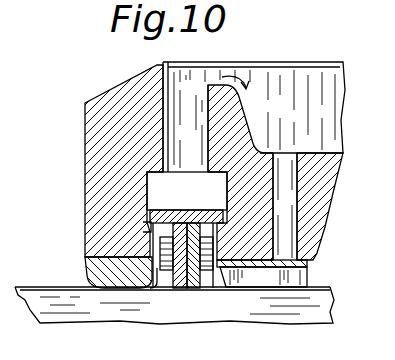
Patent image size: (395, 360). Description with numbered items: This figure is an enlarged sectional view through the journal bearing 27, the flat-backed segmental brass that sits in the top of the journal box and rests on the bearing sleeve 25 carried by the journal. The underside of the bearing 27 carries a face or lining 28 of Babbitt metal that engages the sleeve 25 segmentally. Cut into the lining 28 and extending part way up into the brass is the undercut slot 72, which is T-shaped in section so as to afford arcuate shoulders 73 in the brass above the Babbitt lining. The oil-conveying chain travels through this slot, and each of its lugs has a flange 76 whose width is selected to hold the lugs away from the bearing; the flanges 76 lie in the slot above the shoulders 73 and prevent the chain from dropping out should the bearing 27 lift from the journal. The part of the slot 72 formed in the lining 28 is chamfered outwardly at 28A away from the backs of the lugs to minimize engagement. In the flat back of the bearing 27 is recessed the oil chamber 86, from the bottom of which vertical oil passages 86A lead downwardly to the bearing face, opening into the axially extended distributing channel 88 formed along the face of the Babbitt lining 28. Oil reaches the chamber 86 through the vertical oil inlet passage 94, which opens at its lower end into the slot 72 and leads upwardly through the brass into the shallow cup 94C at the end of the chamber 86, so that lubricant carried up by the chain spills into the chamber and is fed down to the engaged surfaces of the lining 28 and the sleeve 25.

The sleeve 25 is at (60, 286).
The journal bearing 27 is at (93, 91).
The Babbitt lining 28 is at (118, 285).
The chamfer 28A is at (157, 272).
The undercut slot 72 is at (155, 176).
The shoulders 73 is at (143, 228).
The flange 76 is at (188, 140).
The oil chamber 86 is at (299, 98).
The vertical oil passages 86A is at (291, 177).
The distributing channel 88 is at (310, 269).
The oil inlet passage 94 is at (170, 95).
The shallow cup 94C is at (190, 87).